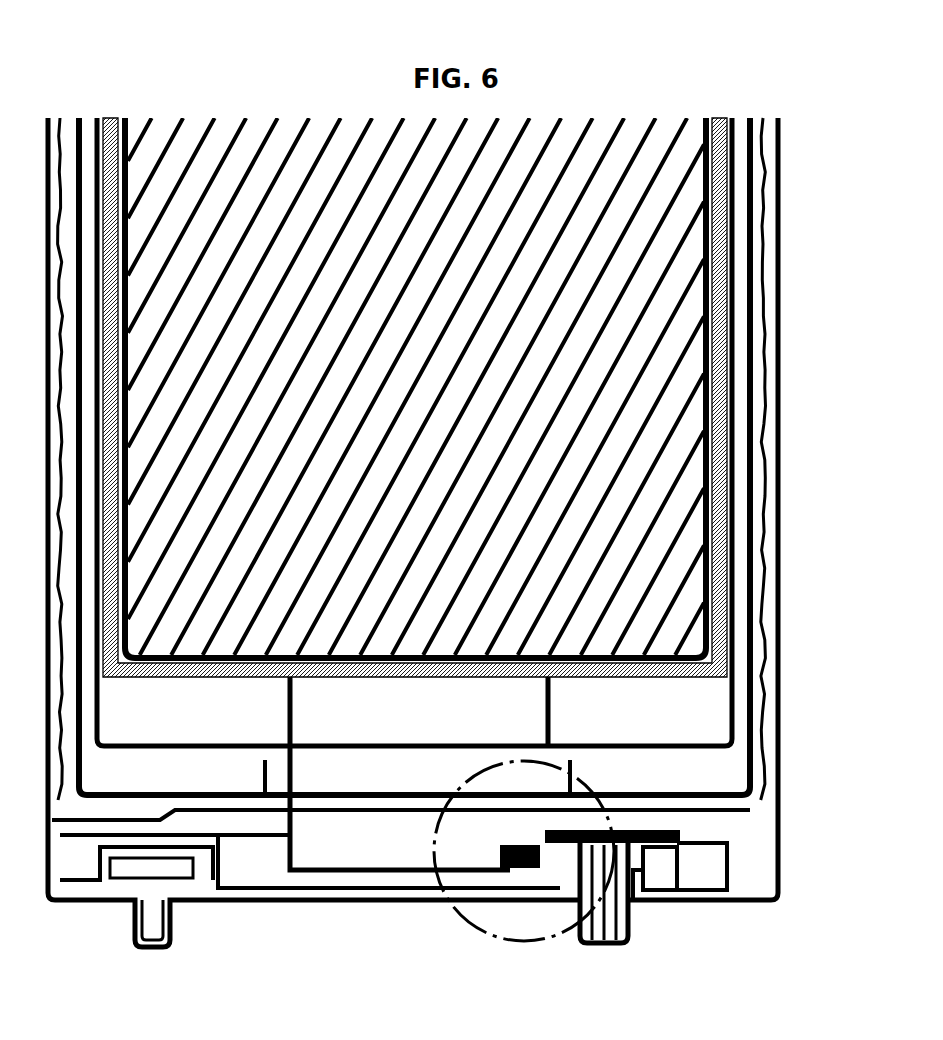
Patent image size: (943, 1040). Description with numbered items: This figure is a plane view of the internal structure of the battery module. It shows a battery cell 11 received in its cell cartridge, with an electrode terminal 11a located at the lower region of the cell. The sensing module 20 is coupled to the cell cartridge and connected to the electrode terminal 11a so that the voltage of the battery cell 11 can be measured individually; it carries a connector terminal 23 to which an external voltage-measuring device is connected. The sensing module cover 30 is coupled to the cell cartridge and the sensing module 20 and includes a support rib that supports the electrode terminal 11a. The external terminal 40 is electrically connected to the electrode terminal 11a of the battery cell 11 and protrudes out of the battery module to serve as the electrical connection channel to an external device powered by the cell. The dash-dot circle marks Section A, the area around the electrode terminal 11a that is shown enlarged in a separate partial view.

The battery cell 11 is at (647, 504).
The electrode terminal 11a is at (385, 848).
The sensing module 20 is at (752, 903).
The connector terminal 23 is at (606, 946).
The sensing module cover 30 is at (78, 905).
The external terminal 40 is at (148, 950).
The Section A is at (475, 922).